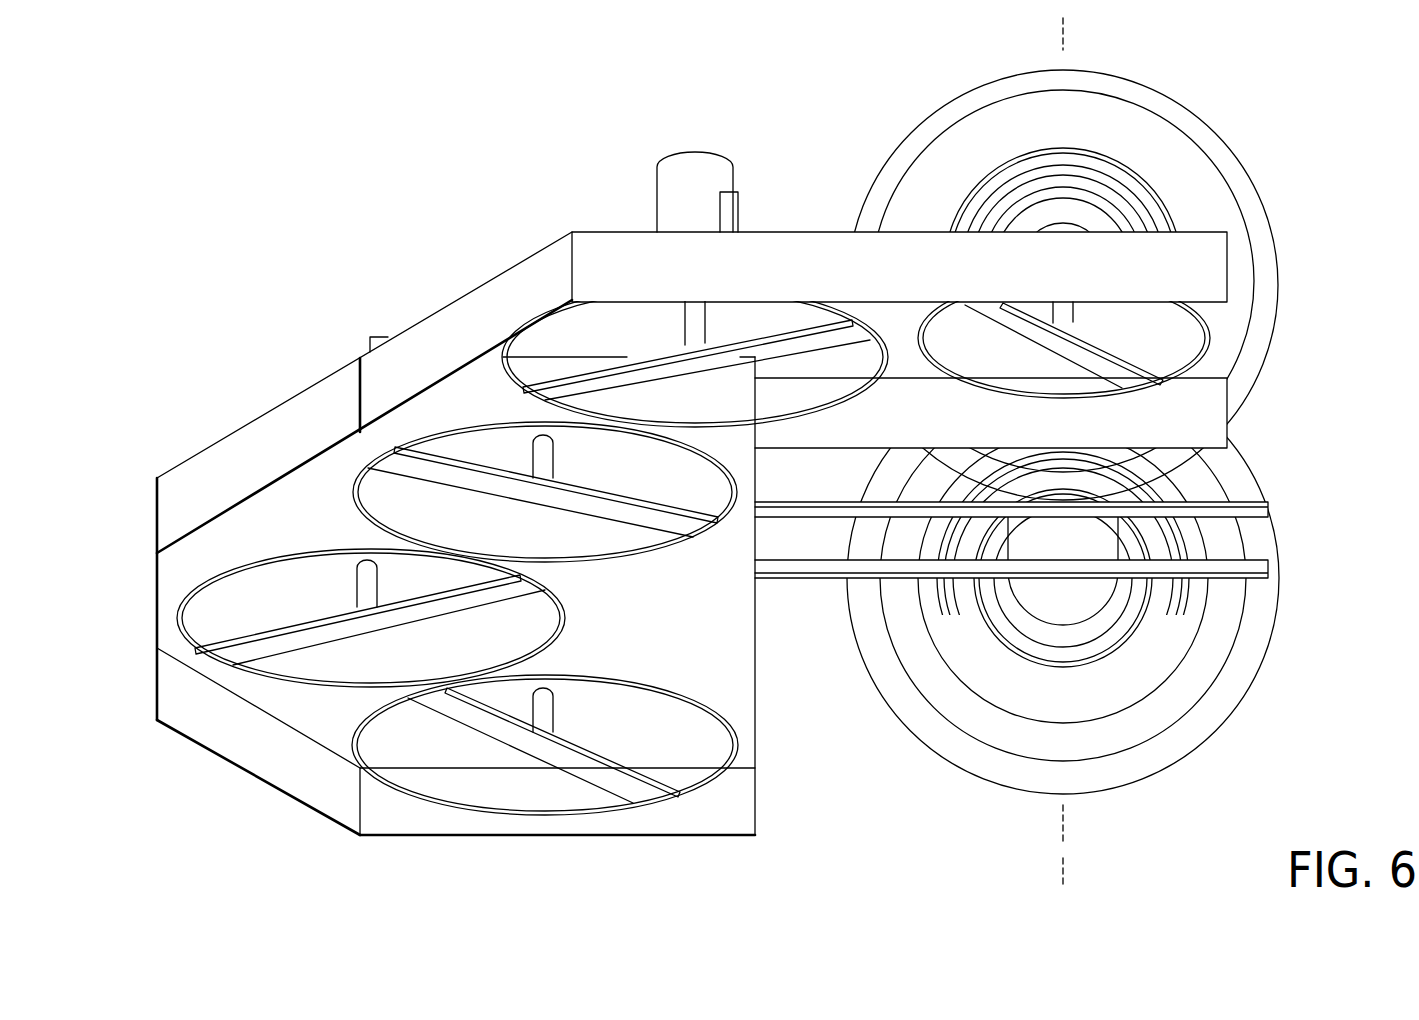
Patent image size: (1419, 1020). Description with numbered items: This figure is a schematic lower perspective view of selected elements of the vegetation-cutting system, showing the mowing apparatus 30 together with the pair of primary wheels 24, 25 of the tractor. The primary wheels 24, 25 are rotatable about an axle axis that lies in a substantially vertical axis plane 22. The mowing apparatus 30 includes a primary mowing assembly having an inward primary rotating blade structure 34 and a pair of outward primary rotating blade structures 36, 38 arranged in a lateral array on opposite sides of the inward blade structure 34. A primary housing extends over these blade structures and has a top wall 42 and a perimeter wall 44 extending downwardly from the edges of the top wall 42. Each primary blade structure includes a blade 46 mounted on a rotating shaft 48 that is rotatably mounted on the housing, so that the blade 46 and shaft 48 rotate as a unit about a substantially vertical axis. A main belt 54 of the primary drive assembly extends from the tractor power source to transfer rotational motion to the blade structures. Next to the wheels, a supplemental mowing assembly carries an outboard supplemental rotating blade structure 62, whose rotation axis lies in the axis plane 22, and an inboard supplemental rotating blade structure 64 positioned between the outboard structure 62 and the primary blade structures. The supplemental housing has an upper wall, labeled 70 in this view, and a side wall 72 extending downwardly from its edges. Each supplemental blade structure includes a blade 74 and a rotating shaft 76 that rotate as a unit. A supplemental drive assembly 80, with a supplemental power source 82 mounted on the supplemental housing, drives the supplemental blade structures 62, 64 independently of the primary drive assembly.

The vertical axis plane 22 is at (1063, 827).
The primary wheel 24 is at (1210, 720).
The primary wheel 25 is at (1245, 193).
The mowing apparatus 30 is at (508, 165).
The inward primary rotating blade structure 34 is at (310, 708).
The outward primary rotating blade structure 36 is at (691, 812).
The outward primary rotating blade structure 38 is at (333, 474).
The top wall 42 is at (265, 690).
The perimeter wall 44 is at (321, 790).
The blade 46 is at (263, 632).
The rotating shaft 48 is at (367, 590).
The main belt 54 is at (1210, 502).
The outboard supplemental rotating blade structure 62 is at (1183, 394).
The inboard supplemental rotating blade structure 64 is at (497, 395).
The receptacle rim 70 is at (1210, 363).
The side wall 72 is at (1193, 277).
The blade 74 is at (1215, 340).
The rotating shaft 76 is at (1075, 323).
The supplemental drive assembly 80 is at (730, 146).
The supplemental power source 82 is at (718, 181).